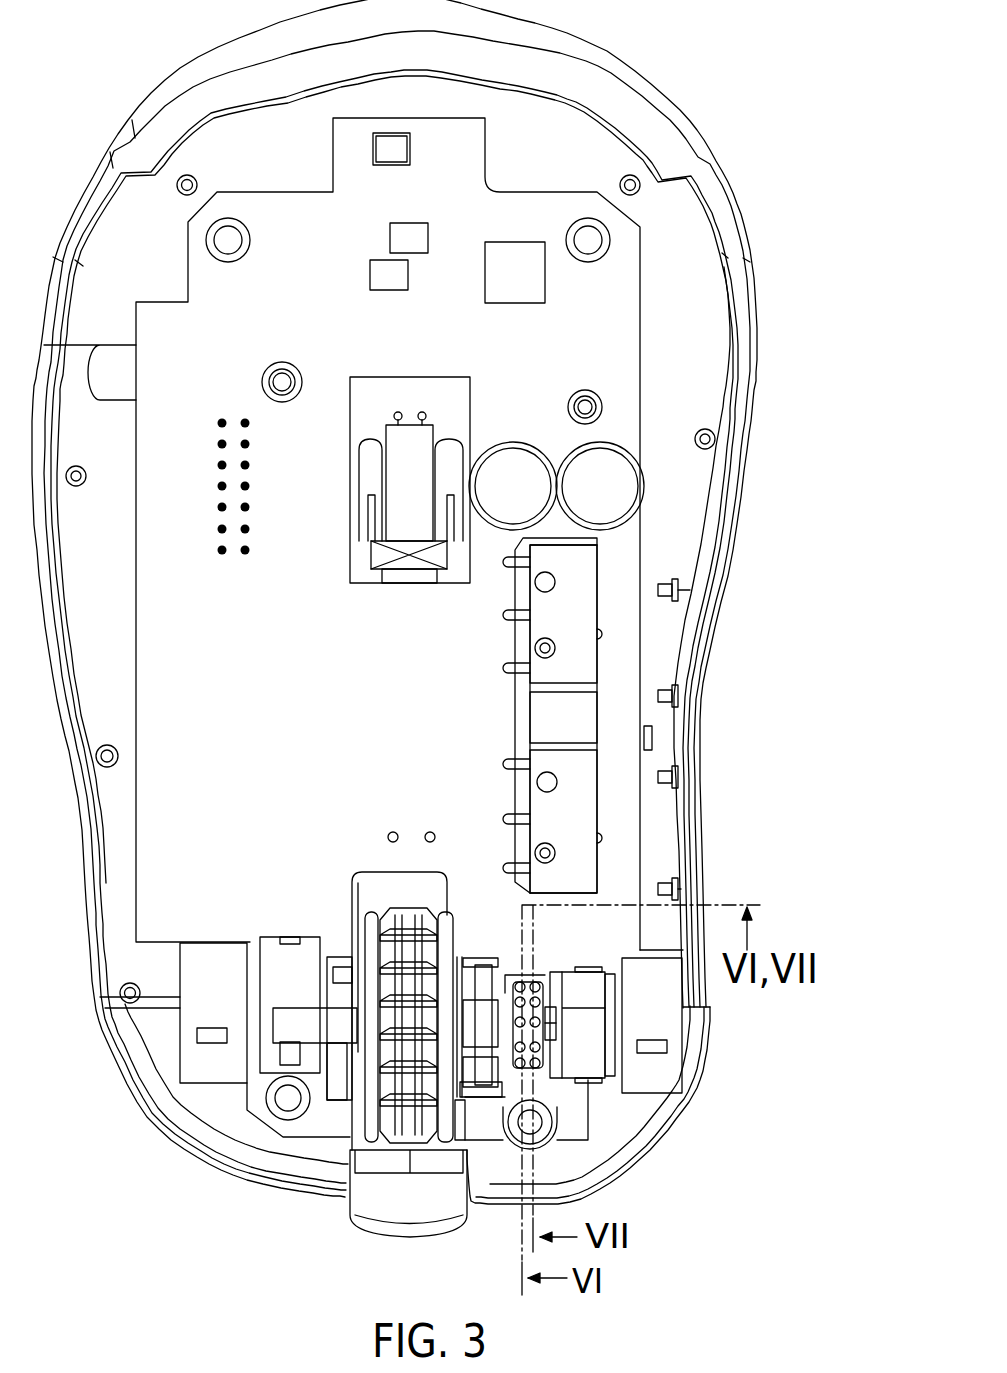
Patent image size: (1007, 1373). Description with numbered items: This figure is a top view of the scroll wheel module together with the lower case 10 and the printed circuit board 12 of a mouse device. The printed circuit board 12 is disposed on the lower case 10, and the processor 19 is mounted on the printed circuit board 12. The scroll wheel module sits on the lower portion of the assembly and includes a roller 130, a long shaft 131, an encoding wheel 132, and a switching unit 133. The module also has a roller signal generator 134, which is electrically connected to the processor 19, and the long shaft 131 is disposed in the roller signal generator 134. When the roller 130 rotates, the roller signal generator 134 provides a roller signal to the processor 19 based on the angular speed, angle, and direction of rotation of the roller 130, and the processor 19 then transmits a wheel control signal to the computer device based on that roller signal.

The lower case 10 is at (595, 57).
The printed circuit board 12 is at (538, 210).
The processor 19 is at (548, 275).
The roller 130 is at (390, 952).
The long shaft 131 is at (555, 1020).
The encoding wheel 132 is at (518, 985).
The switching unit 133 is at (543, 1068).
The roller signal generator 134 is at (588, 1070).